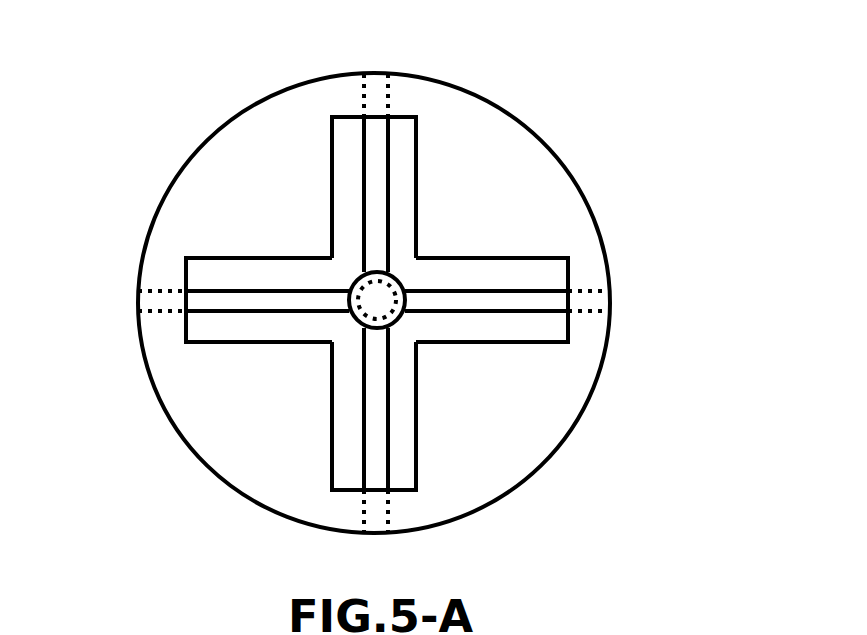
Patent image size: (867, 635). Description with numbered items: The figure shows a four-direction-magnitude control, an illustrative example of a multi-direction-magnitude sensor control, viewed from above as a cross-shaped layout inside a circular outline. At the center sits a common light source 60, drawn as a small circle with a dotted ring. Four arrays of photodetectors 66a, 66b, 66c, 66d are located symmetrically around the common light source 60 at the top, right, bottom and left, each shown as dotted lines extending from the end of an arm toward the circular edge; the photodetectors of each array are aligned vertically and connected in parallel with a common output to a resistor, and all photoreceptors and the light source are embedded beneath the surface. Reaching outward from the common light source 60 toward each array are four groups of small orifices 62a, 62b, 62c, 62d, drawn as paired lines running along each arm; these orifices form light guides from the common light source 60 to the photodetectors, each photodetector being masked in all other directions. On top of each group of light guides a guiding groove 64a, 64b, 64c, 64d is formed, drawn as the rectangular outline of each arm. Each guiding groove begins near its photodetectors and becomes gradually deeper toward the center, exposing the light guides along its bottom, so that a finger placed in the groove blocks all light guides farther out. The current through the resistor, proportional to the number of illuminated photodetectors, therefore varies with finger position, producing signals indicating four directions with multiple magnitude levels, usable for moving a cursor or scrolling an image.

The common light source 60 is at (373, 302).
The group of small orifices 62a is at (373, 192).
The group of small orifices 62b is at (483, 268).
The group of small orifices 62c is at (377, 427).
The group of small orifices 62d is at (255, 300).
The guiding groove 64a is at (402, 203).
The guiding groove 64b is at (490, 300).
The guiding groove 64c is at (402, 402).
The guiding groove 64d is at (262, 330).
The array of photodetectors 66a is at (373, 87).
The array of photodetectors 66b is at (590, 302).
The array of photodetectors 66c is at (377, 512).
The array of photodetectors 66d is at (155, 302).